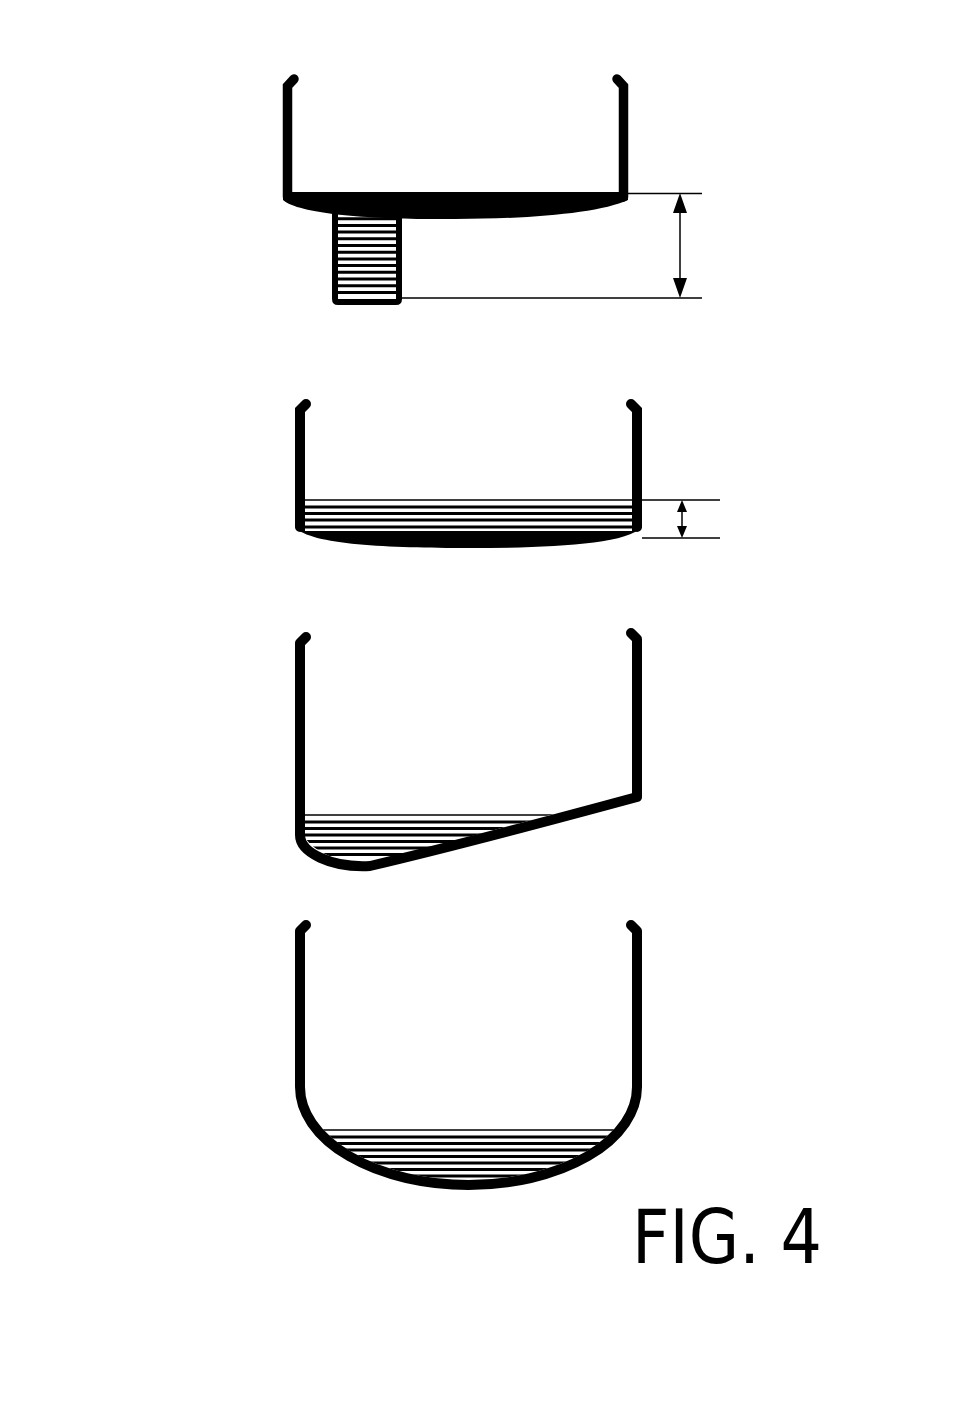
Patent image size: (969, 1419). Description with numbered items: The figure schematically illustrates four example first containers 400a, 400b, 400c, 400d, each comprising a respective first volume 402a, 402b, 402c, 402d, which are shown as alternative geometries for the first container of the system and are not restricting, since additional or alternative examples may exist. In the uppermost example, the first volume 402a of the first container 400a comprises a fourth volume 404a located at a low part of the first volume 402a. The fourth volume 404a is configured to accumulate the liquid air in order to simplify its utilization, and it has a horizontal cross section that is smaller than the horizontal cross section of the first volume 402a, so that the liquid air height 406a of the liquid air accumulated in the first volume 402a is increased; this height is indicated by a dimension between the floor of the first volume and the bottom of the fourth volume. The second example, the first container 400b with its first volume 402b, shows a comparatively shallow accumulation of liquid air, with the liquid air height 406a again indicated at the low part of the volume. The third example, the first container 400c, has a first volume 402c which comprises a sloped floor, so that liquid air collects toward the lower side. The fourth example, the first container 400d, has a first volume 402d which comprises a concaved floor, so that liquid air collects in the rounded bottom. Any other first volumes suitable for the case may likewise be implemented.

The first container 400a is at (425, 184).
The first volume 402a is at (580, 150).
The fourth volume 404a is at (332, 258).
The liquid air height 406a is at (683, 253).
The first container 400b is at (422, 456).
The first volume 402b is at (583, 470).
The first container 400c is at (413, 749).
The first volume 402c is at (558, 762).
The first container 400d is at (415, 1055).
The first volume 402d is at (562, 1047).